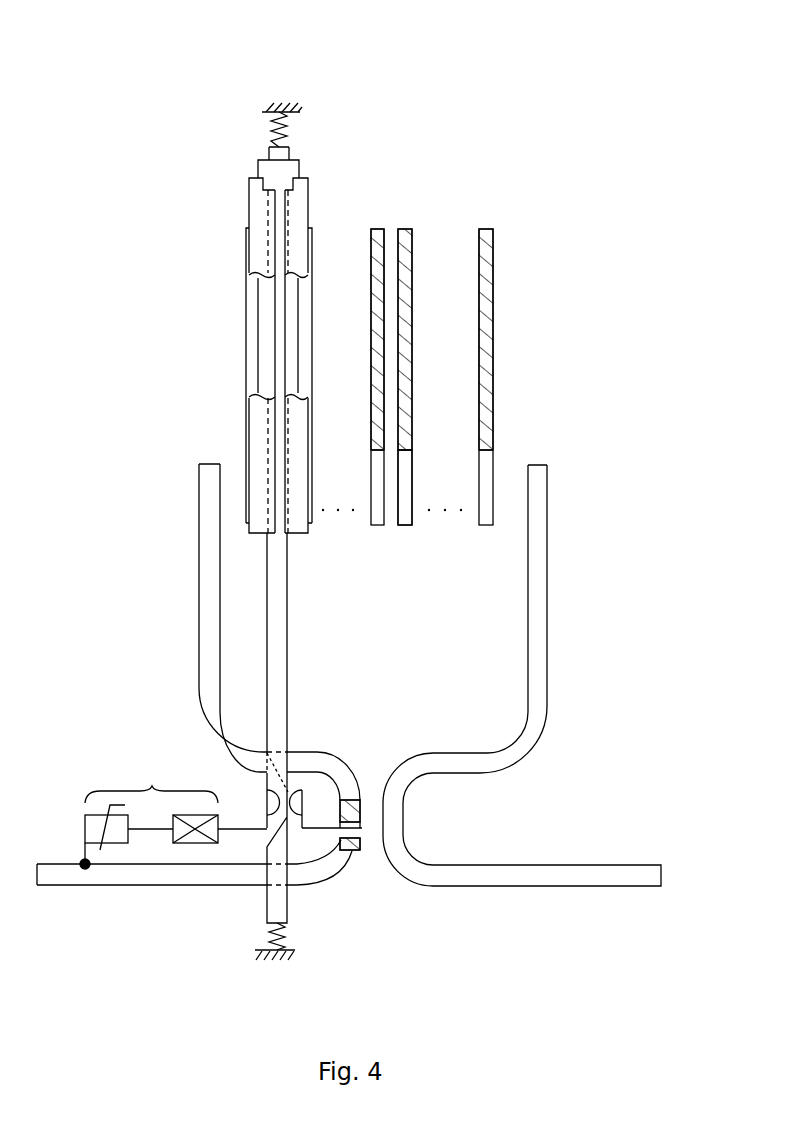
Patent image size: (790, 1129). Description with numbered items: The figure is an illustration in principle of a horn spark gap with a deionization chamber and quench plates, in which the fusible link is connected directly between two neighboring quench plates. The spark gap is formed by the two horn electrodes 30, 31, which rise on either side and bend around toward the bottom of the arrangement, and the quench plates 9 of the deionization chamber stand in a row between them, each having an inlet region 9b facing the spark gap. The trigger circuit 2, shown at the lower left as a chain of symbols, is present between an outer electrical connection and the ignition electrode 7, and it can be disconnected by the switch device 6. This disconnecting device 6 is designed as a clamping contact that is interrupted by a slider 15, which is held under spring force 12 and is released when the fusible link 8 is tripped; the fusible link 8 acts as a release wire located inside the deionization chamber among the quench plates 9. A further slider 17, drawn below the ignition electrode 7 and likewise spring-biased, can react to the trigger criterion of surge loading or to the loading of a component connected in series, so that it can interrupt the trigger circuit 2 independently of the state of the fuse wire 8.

The trigger circuit 2 is at (194, 820).
The disconnecting device 6 is at (265, 793).
The ignition electrode 7 is at (325, 829).
The fusible link 8 is at (298, 163).
The quench plates 9 is at (302, 312).
The inlet region 9b is at (390, 505).
The spring force 12 is at (265, 113).
The slider 15 is at (280, 657).
The further slider 17 is at (282, 848).
The horn electrode 30 is at (199, 530).
The horn electrode 31 is at (547, 640).